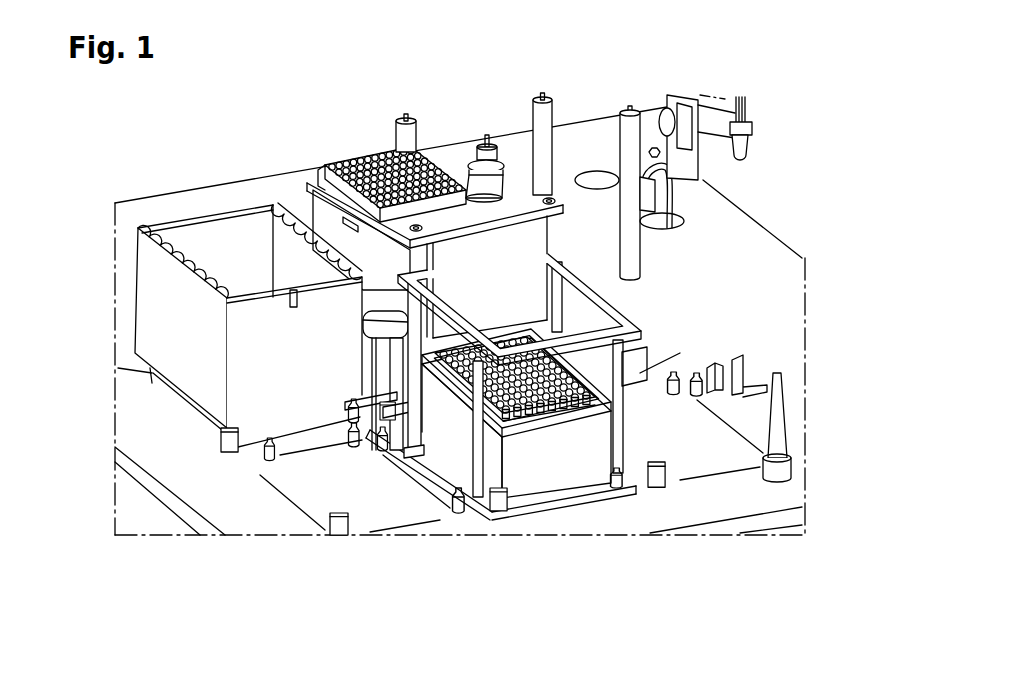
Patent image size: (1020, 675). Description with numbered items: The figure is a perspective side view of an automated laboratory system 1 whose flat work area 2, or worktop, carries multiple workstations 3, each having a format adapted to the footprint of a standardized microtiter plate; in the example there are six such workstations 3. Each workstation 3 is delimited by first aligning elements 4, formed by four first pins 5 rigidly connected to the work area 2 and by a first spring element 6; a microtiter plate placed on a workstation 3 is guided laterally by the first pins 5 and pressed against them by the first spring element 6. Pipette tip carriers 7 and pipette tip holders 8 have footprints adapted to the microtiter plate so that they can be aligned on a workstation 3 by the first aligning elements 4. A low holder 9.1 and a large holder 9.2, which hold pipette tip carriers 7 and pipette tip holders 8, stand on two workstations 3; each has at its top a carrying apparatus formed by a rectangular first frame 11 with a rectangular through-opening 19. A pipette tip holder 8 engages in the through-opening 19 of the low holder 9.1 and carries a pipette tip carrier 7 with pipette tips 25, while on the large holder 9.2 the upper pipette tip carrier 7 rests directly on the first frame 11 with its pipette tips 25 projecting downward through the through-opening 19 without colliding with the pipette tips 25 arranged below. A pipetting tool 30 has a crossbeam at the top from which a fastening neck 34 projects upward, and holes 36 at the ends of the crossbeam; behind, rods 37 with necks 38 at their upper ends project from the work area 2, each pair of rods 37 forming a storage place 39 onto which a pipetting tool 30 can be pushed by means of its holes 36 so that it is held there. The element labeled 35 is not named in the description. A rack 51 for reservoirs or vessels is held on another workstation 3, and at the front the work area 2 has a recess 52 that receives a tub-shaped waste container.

The automated laboratory system 1 is at (746, 186).
The work area 2 is at (233, 540).
The workstation 3 is at (136, 397).
The first aligning elements 4 is at (456, 516).
The first pins 5 is at (617, 488).
The first spring element 6 is at (500, 512).
The pipette tip carrier 7 is at (320, 170).
The pipette tip holder 8 is at (325, 228).
The low holder 9.1 is at (370, 370).
The large holder 9.2 is at (415, 422).
The first frame 11 is at (605, 303).
The through-opening 19 is at (492, 320).
The pipette tips 25 is at (367, 152).
The pipetting tool 30 is at (531, 272).
The fastening neck 34 is at (487, 172).
The base plate 35 is at (540, 195).
The holes 36 is at (430, 226).
The rods 37 is at (415, 127).
The necks 38 is at (405, 114).
The storage place 39 is at (398, 127).
The rack 51 is at (273, 337).
The recess 52 is at (122, 275).